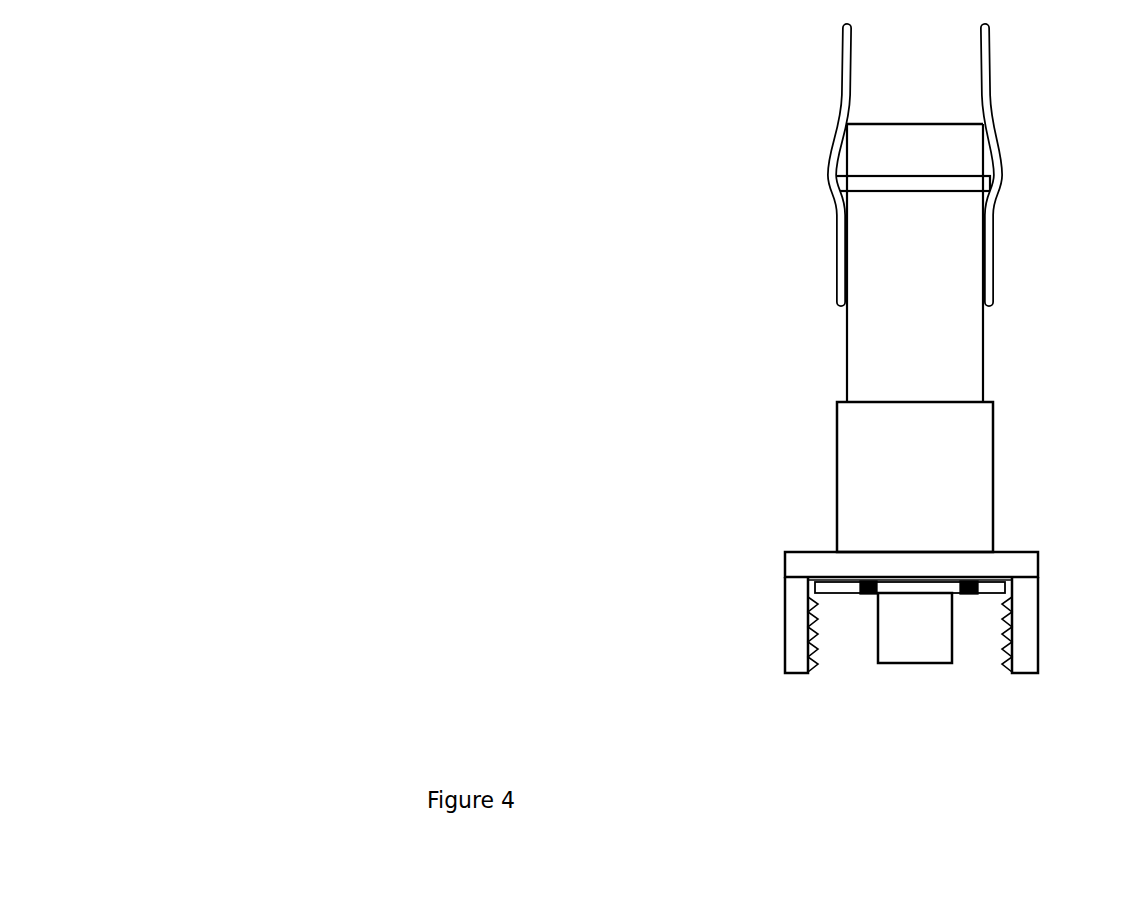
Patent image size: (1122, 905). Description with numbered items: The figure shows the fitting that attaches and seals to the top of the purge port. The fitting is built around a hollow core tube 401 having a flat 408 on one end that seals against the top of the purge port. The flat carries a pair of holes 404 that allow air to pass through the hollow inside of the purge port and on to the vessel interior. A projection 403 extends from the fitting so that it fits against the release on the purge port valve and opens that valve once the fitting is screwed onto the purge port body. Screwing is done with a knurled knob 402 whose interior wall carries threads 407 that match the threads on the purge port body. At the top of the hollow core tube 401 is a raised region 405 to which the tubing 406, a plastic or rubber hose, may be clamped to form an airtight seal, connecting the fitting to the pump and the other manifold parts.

The hollow core tube 401 is at (965, 372).
The knurled knob 402 is at (800, 635).
The projection 403 is at (917, 664).
The holes 404 is at (977, 578).
The raised region 405 is at (952, 182).
The tubing 406 is at (838, 72).
The threads 407 is at (1001, 640).
The flat 408 is at (828, 582).